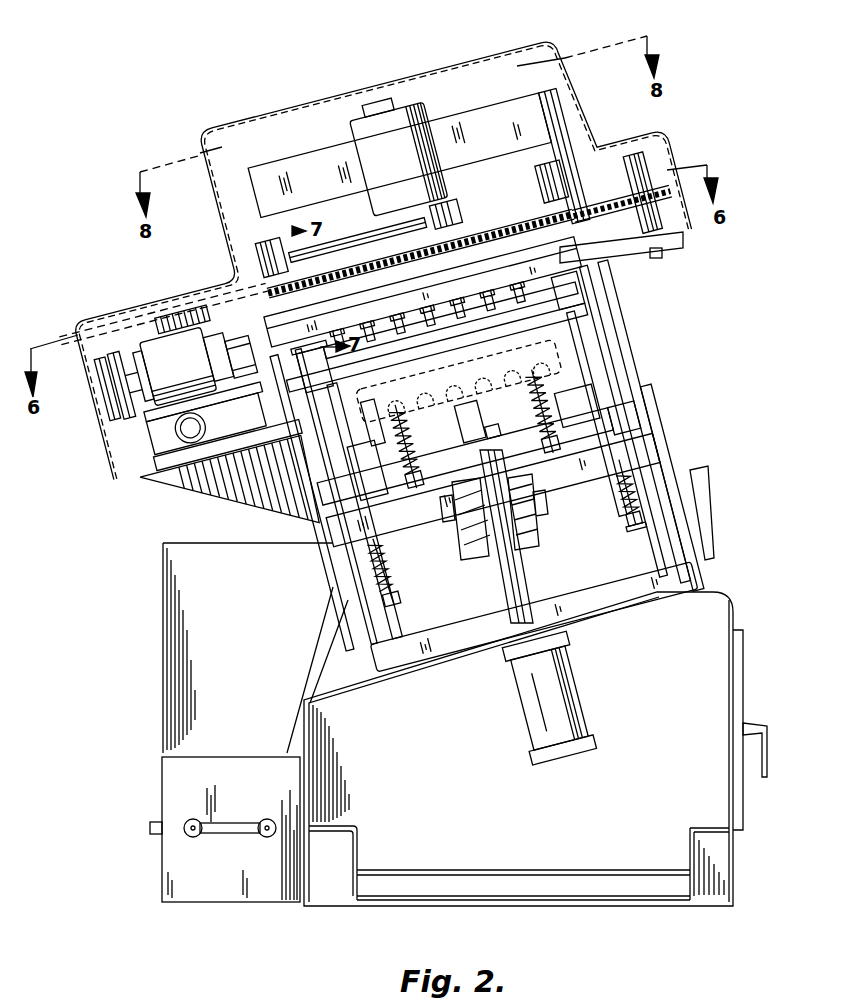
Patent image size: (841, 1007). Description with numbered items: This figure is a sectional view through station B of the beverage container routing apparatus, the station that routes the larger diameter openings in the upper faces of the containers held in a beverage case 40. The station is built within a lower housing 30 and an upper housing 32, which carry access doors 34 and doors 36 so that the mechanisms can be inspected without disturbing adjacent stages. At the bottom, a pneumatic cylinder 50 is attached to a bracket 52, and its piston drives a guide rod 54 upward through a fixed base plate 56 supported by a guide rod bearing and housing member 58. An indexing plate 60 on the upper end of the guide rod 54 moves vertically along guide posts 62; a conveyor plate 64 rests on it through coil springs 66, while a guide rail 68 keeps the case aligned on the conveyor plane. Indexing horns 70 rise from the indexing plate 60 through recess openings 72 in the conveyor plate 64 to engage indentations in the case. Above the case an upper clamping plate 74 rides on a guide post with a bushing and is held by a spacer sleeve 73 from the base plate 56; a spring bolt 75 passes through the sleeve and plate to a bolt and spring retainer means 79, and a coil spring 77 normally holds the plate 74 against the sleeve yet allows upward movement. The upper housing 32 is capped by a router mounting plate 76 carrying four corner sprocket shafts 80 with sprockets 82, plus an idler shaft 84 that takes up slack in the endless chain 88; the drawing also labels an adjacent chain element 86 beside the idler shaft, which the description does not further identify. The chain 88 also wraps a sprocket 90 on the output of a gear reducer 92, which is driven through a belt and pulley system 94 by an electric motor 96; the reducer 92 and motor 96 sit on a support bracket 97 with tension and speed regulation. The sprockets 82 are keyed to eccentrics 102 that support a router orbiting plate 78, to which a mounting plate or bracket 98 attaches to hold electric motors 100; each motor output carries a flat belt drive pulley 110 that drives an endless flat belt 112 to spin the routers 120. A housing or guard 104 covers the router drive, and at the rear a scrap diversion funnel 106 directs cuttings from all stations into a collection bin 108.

The lower housing 30 is at (735, 600).
The upper housing 32 is at (634, 356).
The access doors 34 is at (745, 650).
The doors 36 is at (690, 479).
The beverage case 40 is at (470, 388).
The pneumatic cylinder 50 is at (580, 702).
The bracket 52 is at (612, 607).
The guide rod 54 is at (536, 581).
The fixed base plate 56 is at (652, 452).
The guide rod bearing and housing member 58 is at (530, 513).
The indexing plate 60 is at (640, 412).
The guide posts 62 is at (316, 374).
The conveyor plate 64 is at (514, 382).
The coil springs 66 is at (414, 441).
The guide rail 68 is at (369, 412).
The indexing horns 70 is at (386, 460).
The recess openings 72 is at (478, 393).
The spacer sleeve 73 is at (592, 383).
The upper clamping plate 74 is at (364, 372).
The spring bolt 75 is at (628, 516).
The router mounting plate 76 is at (450, 302).
The coil spring 77 is at (620, 492).
The router orbiting plate 78 is at (520, 274).
The bolt and spring retainer means 79 is at (630, 528).
The corner sprocket shafts 80 is at (272, 258).
The sprockets 82 is at (334, 277).
The idler shaft 84 is at (640, 152).
The drive chain 86 is at (660, 178).
The endless chain 88 is at (236, 278).
The sprocket 90 is at (165, 316).
The gear reducer 92 is at (240, 376).
The belt and pulley system 94 is at (118, 409).
The electric motor 96 is at (194, 378).
The support bracket 97 is at (180, 483).
The mounting plate or bracket 98 is at (305, 160).
The electric motors 100 is at (424, 169).
The eccentrics 102 is at (618, 257).
The housing or guard 104 is at (452, 52).
The scrap diversion funnel 106 is at (163, 650).
The collection bin 108 is at (162, 797).
The flat belt drive pulley 110 is at (447, 214).
The endless flat belt 112 is at (388, 233).
The routers 120 is at (420, 312).